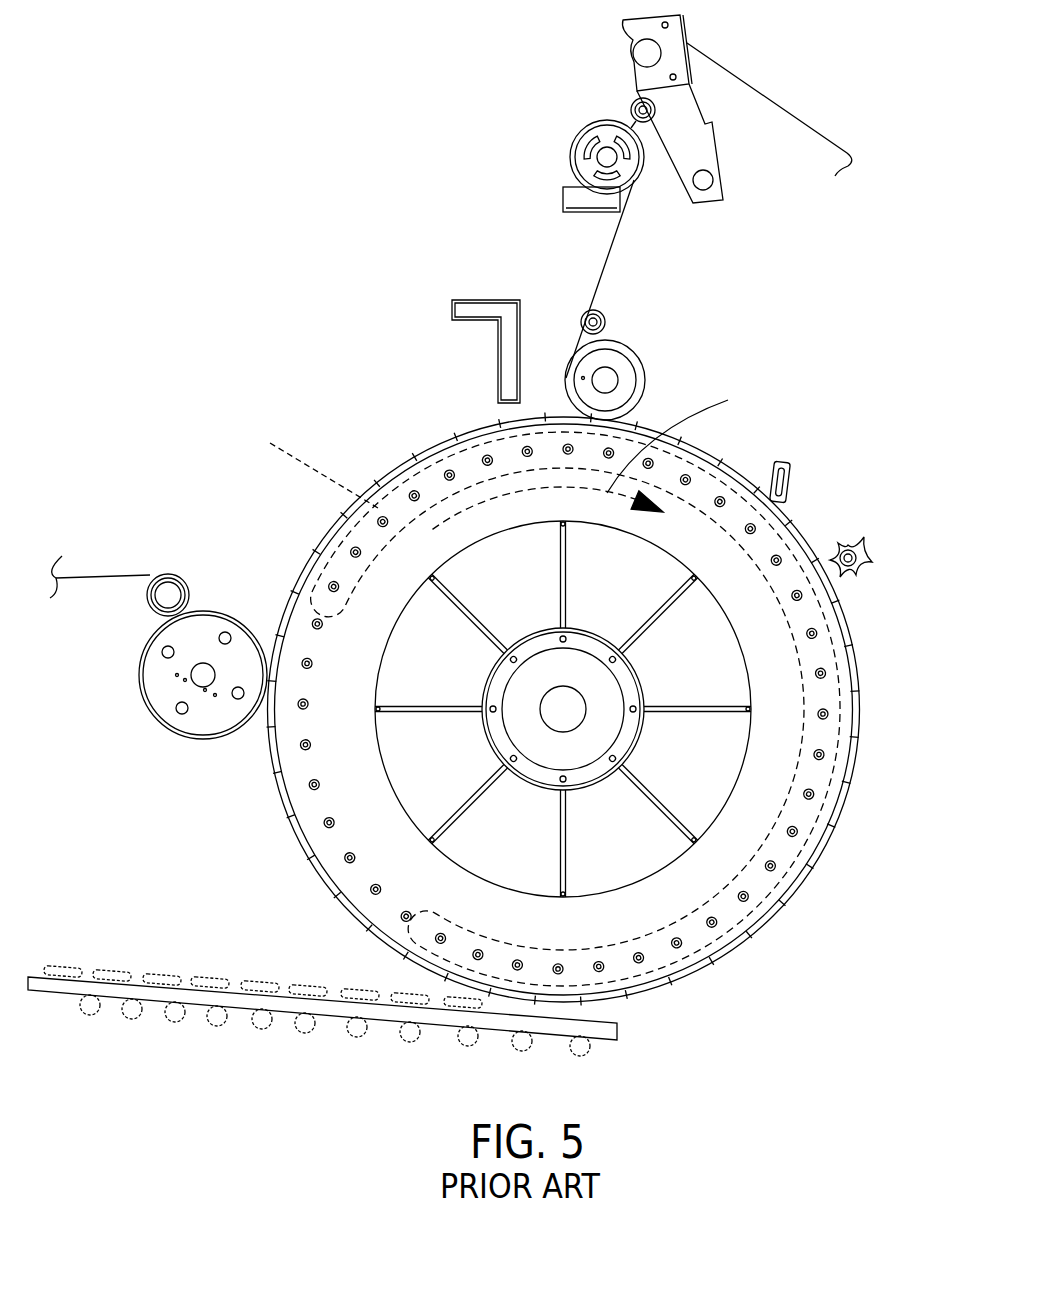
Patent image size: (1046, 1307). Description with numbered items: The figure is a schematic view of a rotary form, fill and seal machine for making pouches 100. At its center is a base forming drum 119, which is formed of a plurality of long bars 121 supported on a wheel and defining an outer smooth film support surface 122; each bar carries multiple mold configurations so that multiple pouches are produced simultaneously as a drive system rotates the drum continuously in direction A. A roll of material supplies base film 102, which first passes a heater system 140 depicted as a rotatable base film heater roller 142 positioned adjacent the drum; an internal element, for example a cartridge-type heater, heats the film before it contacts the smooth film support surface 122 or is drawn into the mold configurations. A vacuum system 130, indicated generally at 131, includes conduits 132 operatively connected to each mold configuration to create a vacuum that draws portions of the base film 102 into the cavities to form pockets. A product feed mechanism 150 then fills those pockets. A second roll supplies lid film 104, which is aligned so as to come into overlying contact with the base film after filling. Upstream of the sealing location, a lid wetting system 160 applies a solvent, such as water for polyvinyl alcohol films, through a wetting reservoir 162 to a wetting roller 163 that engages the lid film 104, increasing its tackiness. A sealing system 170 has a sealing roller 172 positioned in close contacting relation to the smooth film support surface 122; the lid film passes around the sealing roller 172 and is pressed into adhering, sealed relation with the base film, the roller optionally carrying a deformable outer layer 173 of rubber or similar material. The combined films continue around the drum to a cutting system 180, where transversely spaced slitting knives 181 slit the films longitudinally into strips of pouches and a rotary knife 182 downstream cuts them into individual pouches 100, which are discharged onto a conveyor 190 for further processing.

The pouches 100 is at (208, 974).
The base film 102 is at (115, 573).
The lid film 104 is at (787, 127).
The base forming drum 119 is at (708, 480).
The long bars 121 is at (292, 845).
The outer smooth film support surface 122 is at (277, 787).
The vacuum system 130 is at (392, 460).
The vacuum system 131 is at (303, 465).
The conduits 132 is at (350, 552).
The heater system 140 is at (130, 668).
The base film heater roller 142 is at (167, 692).
The product feed mechanism 150 is at (460, 296).
The lid wetting system 160 is at (562, 118).
The wetting reservoir 162 is at (562, 200).
The wetting roller 163 is at (571, 160).
The sealing system 170 is at (623, 333).
The sealing roller 172 is at (620, 367).
The outer layer 173 is at (643, 383).
The cutting system 180 is at (800, 515).
The slitting knives 181 is at (786, 460).
The rotary knife 182 is at (868, 578).
The conveyor 190 is at (553, 1037).